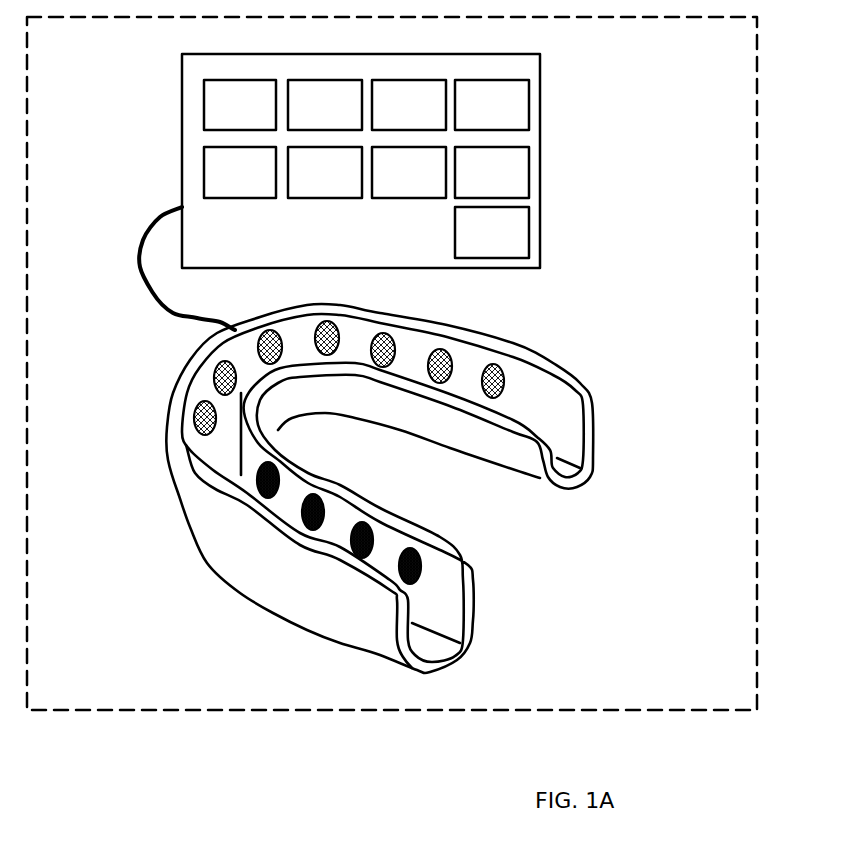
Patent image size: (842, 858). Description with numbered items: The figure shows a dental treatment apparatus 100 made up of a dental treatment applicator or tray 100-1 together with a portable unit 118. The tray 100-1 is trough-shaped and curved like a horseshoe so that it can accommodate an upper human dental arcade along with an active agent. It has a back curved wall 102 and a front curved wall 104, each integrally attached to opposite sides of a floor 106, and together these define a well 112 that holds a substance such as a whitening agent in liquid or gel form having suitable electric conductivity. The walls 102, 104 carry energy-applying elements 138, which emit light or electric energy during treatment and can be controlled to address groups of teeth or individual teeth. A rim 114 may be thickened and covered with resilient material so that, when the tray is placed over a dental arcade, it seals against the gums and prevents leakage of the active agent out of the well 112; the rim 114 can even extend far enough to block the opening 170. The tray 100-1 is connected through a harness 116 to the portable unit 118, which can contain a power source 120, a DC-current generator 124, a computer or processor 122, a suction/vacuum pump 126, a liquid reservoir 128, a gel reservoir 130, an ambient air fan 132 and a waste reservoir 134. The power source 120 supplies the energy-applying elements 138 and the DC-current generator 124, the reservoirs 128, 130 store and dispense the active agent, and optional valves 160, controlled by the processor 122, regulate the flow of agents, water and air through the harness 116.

The dental treatment apparatus 100 is at (28, 643).
The dental treatment applicator or tray 100-1 is at (530, 297).
The back curved wall 102 is at (293, 493).
The front curved wall 104 is at (305, 333).
The floor 106 is at (427, 640).
The well 112 is at (357, 338).
The rim 114 is at (571, 378).
The harness 116 is at (156, 238).
The portable unit 118 is at (283, 54).
The power source 120 is at (492, 105).
The computer or processor 122 is at (409, 105).
The DC-current generator 124 is at (325, 105).
The suction/vacuum pump 126 is at (240, 105).
The liquid reservoir 128 is at (492, 172).
The gel reservoir 130 is at (409, 172).
The ambient air fan 132 is at (325, 172).
The waste reservoir 134 is at (240, 172).
The energy-applying elements 138 is at (392, 344).
The valves 160 is at (492, 232).
The opening 170 is at (566, 445).